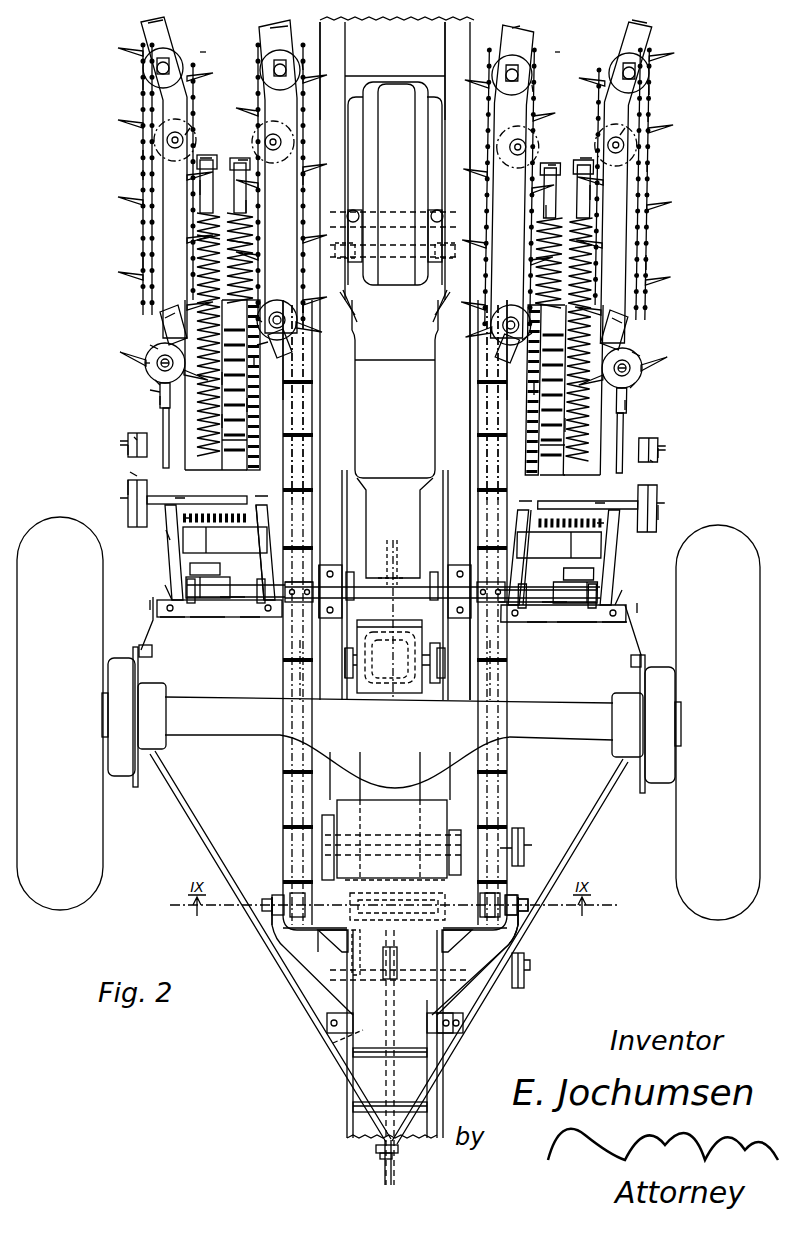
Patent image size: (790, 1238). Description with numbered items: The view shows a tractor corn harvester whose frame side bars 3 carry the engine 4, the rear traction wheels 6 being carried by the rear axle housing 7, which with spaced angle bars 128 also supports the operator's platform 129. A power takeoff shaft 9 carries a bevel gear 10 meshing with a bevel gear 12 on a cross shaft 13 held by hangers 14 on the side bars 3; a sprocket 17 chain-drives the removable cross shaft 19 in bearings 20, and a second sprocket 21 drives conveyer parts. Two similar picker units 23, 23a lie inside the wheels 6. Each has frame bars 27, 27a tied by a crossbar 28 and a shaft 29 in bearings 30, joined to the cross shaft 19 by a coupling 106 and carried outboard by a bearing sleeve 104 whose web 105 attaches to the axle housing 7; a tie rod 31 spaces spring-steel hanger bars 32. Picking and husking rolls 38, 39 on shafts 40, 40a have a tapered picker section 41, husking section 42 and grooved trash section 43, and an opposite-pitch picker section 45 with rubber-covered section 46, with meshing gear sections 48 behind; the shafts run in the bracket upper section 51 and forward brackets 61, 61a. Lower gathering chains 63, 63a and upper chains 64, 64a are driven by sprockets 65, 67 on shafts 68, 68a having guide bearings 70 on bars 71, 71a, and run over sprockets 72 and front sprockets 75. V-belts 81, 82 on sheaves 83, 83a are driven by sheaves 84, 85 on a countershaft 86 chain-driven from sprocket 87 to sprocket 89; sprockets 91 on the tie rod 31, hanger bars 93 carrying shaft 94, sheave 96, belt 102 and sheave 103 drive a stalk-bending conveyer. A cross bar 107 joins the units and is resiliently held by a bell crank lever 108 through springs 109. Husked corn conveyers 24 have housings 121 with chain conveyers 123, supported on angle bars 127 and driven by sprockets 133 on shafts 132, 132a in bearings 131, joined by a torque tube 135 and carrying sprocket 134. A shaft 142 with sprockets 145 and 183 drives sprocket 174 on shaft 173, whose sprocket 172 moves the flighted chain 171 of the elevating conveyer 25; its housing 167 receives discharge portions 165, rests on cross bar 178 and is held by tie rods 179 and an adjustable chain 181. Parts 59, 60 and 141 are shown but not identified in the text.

The frame member 3 is at (346, 44).
The tank 4 is at (389, 116).
The wheel 6 is at (45, 530).
The frame bar 7 is at (446, 765).
The shaft 9 is at (392, 548).
The gear housing 10 is at (388, 628).
The gear 12 is at (400, 690).
The housing 13 is at (380, 690).
The bearing 14 is at (347, 640).
The shaft 17 is at (432, 680).
The shaft 19 is at (350, 590).
The bracket 20 is at (328, 614).
The axle housing 21 is at (318, 677).
The planting unit 23 is at (216, 51).
The planting unit 23a is at (570, 51).
The frame bar 24 is at (318, 425).
The tongue 25 is at (350, 1123).
The chain 27 is at (143, 263).
The spring 27a is at (253, 243).
The bracket 28 is at (172, 618).
The shaft 29 is at (228, 597).
The arm 30 is at (165, 585).
The rack 31 is at (247, 405).
The link 32 is at (265, 370).
The gear 38 is at (222, 378).
The rack 39 is at (230, 442).
The rod 40 is at (200, 186).
The rod 40a is at (247, 208).
The spring 41 is at (200, 241).
The spring 42 is at (222, 421).
The guide 43 is at (226, 470).
The cross bar 45 is at (393, 305).
The bracket 46 is at (350, 355).
The gear 48 is at (183, 530).
The housing 51 is at (388, 542).
The plate 59 is at (586, 623).
The bracket 60 is at (216, 576).
The lever 61 is at (205, 158).
The lever 61a is at (243, 160).
The tine 63 is at (142, 171).
The tine 63a is at (318, 180).
The chain 64 is at (142, 150).
The chain 64a is at (302, 62).
The sprocket 65 is at (150, 345).
The shaft 67 is at (393, 365).
The link 68 is at (155, 380).
The link 68a is at (257, 345).
The link 70 is at (170, 318).
The column 71 is at (148, 23).
The column 71a is at (288, 26).
The sprocket 72 is at (190, 128).
The sprocket 75 is at (143, 80).
The arm 81 is at (150, 390).
The bracket 82 is at (352, 380).
The sprocket 83 is at (145, 363).
The sprocket 83a is at (258, 319).
The arm 84 is at (166, 530).
The arm 85 is at (300, 516).
The shaft 86 is at (183, 496).
The bearing 87 is at (248, 618).
The arm 89 is at (262, 495).
The pawl 91 is at (254, 361).
The rod 93 is at (163, 428).
The pulley 94 is at (128, 450).
The belt 96 is at (134, 437).
The bracket 102 is at (130, 472).
The pulley 103 is at (128, 487).
The nut 104 is at (150, 600).
The brace 105 is at (147, 625).
The bracket 106 is at (302, 584).
The clamp 107 is at (372, 225).
The bracket 108 is at (436, 265).
The band 109 is at (360, 212).
The rod 121 is at (318, 481).
The bearing 123 is at (296, 656).
The bracket 127 is at (324, 1012).
The axle housing 128 is at (359, 778).
The differential housing 129 is at (393, 790).
The brace 131 is at (250, 915).
The pulley 132 is at (270, 900).
The pulley 132a is at (522, 918).
The bearing 133 is at (280, 888).
The shaft 134 is at (425, 882).
The bracket 135 is at (360, 950).
The shaft 141 is at (448, 838).
The pulley 142 is at (527, 850).
The bracket 145 is at (336, 823).
The brace 165 is at (303, 985).
The tongue member 167 is at (432, 1118).
The cross bar 171 is at (400, 1052).
The sprocket 172 is at (394, 975).
The bracket 173 is at (328, 958).
The sprocket 174 is at (520, 972).
The brace 178 is at (331, 1048).
The brace 179 is at (195, 828).
The hitch 181 is at (383, 1170).
The bearing 183 is at (520, 838).